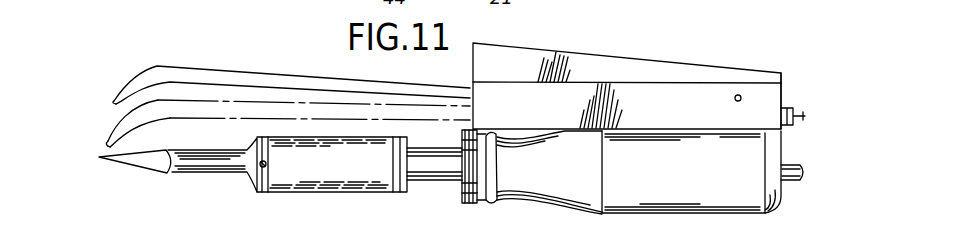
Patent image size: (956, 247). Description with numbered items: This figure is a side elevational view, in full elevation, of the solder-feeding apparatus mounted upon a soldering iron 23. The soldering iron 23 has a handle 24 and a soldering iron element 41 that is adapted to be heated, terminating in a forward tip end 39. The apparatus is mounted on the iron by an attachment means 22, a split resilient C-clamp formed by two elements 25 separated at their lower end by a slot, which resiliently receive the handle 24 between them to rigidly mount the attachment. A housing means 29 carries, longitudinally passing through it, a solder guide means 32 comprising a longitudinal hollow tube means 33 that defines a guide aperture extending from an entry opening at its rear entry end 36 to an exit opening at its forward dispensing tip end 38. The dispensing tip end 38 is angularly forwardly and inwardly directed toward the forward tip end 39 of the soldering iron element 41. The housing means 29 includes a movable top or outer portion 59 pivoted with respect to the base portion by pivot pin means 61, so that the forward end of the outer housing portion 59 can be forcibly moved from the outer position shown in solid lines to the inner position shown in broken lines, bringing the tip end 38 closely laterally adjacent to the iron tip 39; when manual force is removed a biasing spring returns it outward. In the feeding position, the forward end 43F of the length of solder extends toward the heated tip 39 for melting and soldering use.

The attachment means 22 is at (641, 215).
The soldering iron 23 is at (458, 197).
The handle 24 is at (518, 178).
The elements 25 is at (750, 178).
The housing means 29 is at (785, 90).
The solder guide means 32 is at (326, 52).
The longitudinal hollow tube means 33 is at (235, 77).
The rear entry end 36 is at (790, 110).
The forward dispensing tip end 38 is at (113, 99).
The forward tip end 39 is at (118, 162).
The soldering iron element 41 is at (190, 170).
The forward end of the length of solder 43F is at (106, 147).
The top or outer housing portion 59 is at (468, 72).
The pivot pin means 61 is at (737, 101).